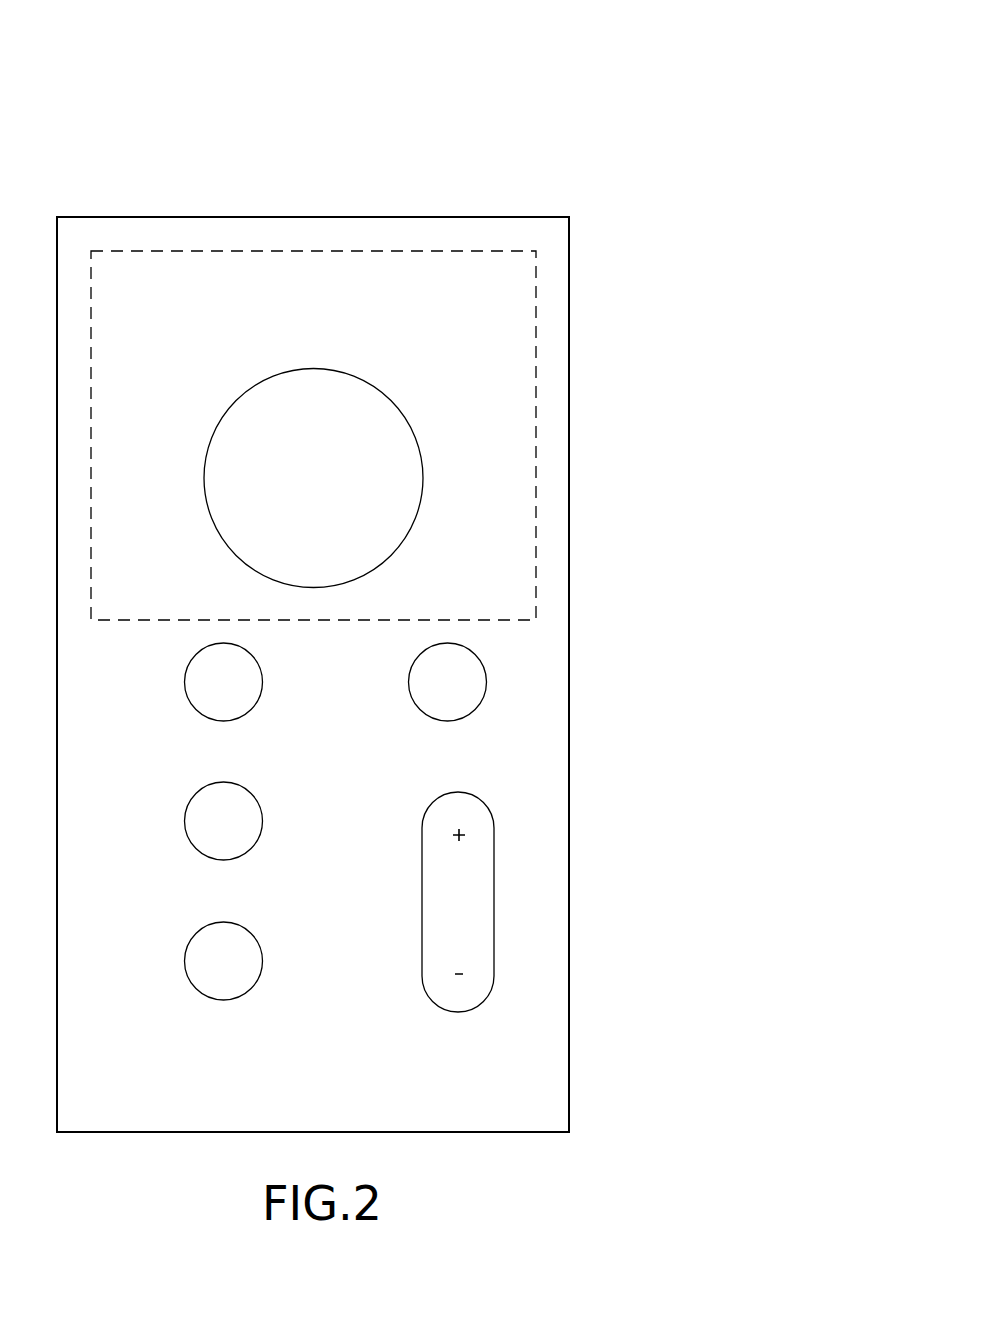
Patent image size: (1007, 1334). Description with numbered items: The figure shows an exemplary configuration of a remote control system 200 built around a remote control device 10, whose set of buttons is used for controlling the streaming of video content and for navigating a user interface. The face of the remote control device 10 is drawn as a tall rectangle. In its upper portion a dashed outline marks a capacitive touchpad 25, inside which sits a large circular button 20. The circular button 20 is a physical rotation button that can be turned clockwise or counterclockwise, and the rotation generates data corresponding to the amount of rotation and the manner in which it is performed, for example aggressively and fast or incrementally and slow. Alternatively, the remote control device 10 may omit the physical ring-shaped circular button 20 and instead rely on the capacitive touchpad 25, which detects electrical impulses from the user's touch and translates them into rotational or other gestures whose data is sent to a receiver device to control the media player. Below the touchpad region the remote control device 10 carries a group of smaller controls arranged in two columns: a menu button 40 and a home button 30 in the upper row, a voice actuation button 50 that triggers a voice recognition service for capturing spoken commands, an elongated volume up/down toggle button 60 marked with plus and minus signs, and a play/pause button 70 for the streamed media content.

The remote control system 200 is at (542, 92).
The remote control device 10 is at (556, 218).
The capacitive touchpad 25 is at (536, 393).
The circular button 20 is at (364, 381).
The home button 30 is at (486, 680).
The menu button 40 is at (262, 680).
The voice actuation button 50 is at (262, 819).
The volume up/down toggle button 60 is at (487, 806).
The play/pause button 70 is at (262, 959).